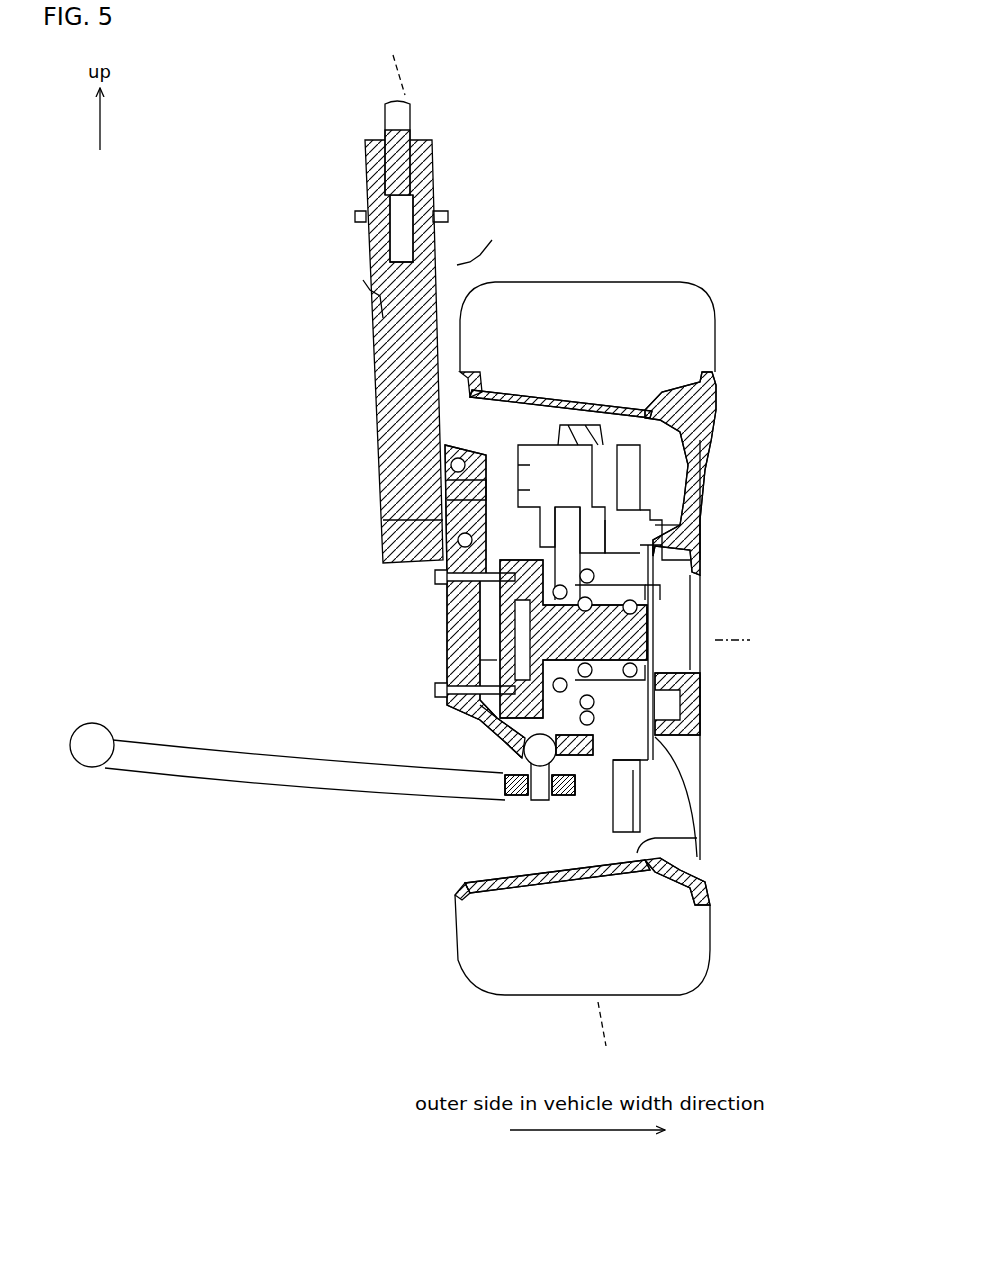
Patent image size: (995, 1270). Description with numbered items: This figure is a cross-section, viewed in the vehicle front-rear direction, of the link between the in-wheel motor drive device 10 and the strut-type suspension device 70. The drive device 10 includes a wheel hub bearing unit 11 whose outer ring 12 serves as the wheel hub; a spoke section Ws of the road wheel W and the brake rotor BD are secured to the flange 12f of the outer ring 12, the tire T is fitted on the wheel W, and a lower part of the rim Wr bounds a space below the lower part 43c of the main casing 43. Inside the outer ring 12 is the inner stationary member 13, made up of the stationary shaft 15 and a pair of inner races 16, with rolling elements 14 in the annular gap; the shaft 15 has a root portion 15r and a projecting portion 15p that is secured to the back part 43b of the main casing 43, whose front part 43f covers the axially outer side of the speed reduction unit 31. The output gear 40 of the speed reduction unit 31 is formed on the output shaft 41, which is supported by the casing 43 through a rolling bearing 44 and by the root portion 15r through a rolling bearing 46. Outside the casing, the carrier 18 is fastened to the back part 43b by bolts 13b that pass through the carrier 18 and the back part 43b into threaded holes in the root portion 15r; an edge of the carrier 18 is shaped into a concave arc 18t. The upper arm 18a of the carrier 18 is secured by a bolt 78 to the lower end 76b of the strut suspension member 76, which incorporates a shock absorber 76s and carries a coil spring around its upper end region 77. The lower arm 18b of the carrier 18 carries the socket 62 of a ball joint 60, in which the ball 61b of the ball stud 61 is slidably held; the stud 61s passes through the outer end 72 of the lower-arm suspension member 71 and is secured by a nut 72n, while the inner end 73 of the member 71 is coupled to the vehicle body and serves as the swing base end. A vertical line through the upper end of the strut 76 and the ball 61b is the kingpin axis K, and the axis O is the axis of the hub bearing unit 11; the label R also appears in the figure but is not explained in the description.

The in-wheel motor drive device 10 is at (545, 438).
The wheel hub bearing unit 11 is at (690, 650).
The outer ring 12 is at (688, 720).
The flange 12f is at (655, 560).
The inner stationary member 13 is at (650, 622).
The bolts 13b is at (435, 577).
The rolling elements 14 is at (575, 585).
The stationary shaft 15 is at (645, 665).
The projecting portion 15p is at (558, 539).
The root portion 15r is at (515, 640).
The inner races 16 is at (650, 607).
The carrier 18 is at (445, 625).
The upper arm 18a is at (452, 465).
The lower arm 18b is at (500, 745).
The arc 18t is at (495, 660).
The speed reduction unit 31 is at (578, 468).
The output gear 40 is at (660, 745).
The output shaft 41 is at (690, 700).
The main casing 43 is at (530, 445).
The back part 43b is at (447, 490).
The lower part 43c is at (650, 760).
The front part 43f is at (655, 524).
The rolling bearing 44 is at (660, 552).
The rolling bearing 46 is at (470, 712).
The ball joint 60 is at (512, 760).
The ball stud 61 is at (525, 845).
The ball 61b is at (505, 790).
The stud 61s is at (535, 800).
The socket 62 is at (570, 758).
The suspension device 70 is at (330, 342).
The suspension member 71 is at (300, 792).
The outer end 72 is at (580, 790).
The nut 72n is at (556, 800).
The inner end 73 is at (92, 760).
The suspension member 76 is at (385, 375).
The lower end 76b is at (390, 524).
The shock absorber 76s is at (400, 235).
The upper end region 77 is at (405, 112).
The bolt 78 is at (445, 462).
The tire T is at (663, 282).
The road wheel W is at (722, 392).
The spoke section Ws is at (702, 483).
The rim Wr is at (700, 840).
The brake rotor BD is at (640, 470).
The axis O is at (742, 639).
The tire radius R is at (600, 998).
The kingpin axis K is at (605, 1035).